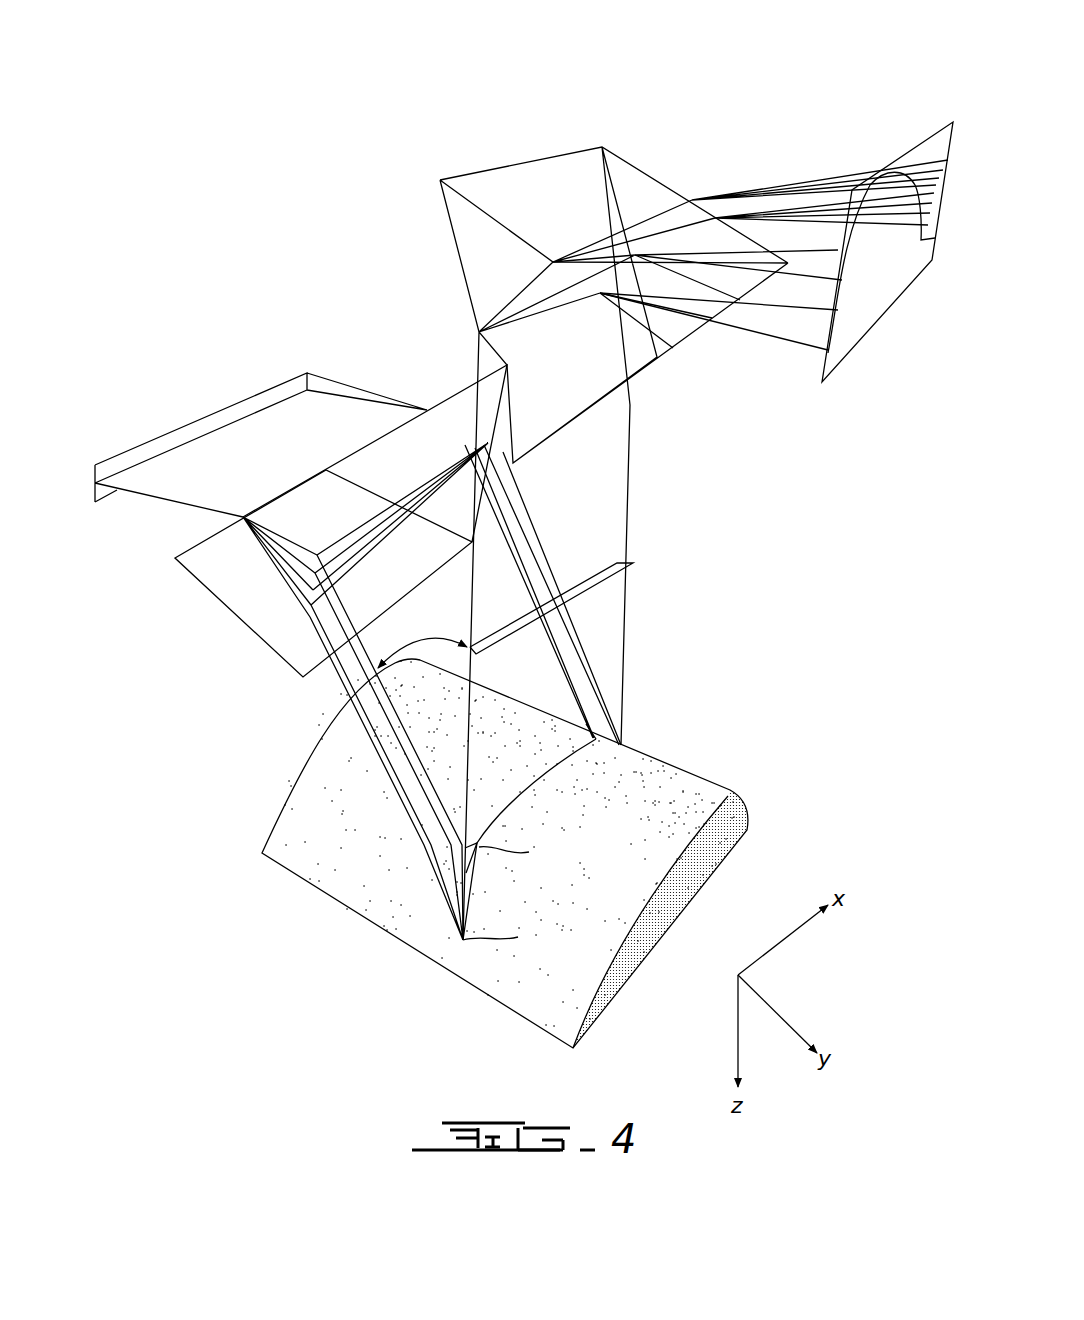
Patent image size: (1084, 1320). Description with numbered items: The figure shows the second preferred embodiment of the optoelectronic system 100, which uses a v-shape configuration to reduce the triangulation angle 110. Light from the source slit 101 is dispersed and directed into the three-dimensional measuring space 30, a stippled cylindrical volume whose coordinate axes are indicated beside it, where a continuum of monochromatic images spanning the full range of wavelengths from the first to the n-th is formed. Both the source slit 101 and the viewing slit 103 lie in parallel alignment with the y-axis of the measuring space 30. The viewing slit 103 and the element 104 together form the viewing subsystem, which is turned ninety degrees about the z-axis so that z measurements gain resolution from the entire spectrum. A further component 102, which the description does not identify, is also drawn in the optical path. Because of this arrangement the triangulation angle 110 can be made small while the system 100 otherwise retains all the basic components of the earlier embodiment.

The optoelectronic system 100 is at (524, 541).
The source slit 101 is at (200, 420).
The first mirror 102 is at (233, 618).
The viewing slit 103 is at (602, 583).
The viewing subsystem 104 is at (765, 160).
The triangulation angle 110 is at (425, 640).
The measuring space 30 is at (450, 927).